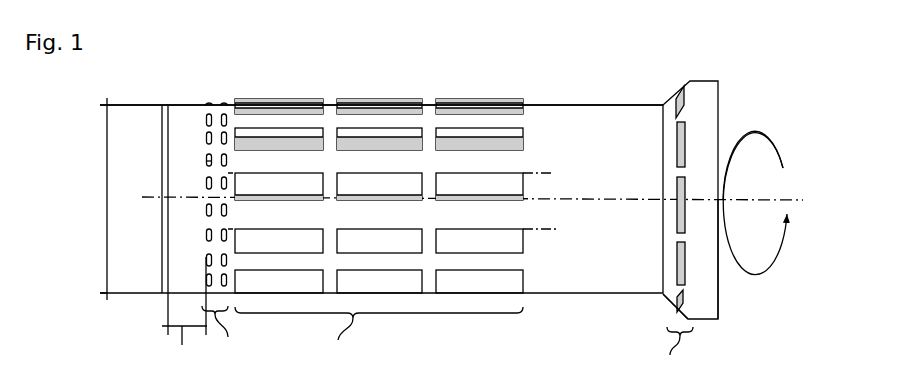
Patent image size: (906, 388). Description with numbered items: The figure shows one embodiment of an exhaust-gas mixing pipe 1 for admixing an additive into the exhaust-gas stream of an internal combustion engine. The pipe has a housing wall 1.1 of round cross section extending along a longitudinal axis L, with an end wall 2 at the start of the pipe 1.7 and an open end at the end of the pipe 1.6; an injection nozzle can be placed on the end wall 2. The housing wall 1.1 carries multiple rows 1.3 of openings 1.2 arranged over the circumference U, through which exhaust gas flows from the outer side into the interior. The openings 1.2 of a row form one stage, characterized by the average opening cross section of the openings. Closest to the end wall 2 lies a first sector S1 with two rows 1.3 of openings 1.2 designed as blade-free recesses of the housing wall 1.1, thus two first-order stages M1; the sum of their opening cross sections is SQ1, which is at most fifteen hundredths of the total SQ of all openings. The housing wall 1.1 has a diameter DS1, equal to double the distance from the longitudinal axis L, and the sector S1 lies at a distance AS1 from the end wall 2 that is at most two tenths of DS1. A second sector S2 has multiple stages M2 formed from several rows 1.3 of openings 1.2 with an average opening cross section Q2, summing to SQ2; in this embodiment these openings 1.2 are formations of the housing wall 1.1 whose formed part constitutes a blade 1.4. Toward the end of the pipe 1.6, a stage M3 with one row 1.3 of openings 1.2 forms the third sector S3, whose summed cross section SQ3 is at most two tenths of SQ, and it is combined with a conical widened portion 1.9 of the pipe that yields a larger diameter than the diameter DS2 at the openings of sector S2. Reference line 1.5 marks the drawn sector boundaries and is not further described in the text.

The exhaust-gas mixing pipe 1 is at (372, 60).
The housing wall 1.1 is at (617, 106).
The openings 1.2 is at (207, 161).
The rows of openings 1.3 is at (687, 54).
The blade 1.4 is at (379, 195).
The reference lines 1.5 is at (552, 173).
The end of the pipe 1.6 is at (722, 277).
The start of the pipe 1.7 is at (163, 265).
The conical widened portion 1.9 is at (659, 312).
The end wall 2 is at (163, 153).
The first-order stage M1 is at (213, 166).
The second-order stage M2 is at (379, 73).
The third-order stage M3 is at (690, 178).
The average opening cross section of sector S2 Q2 is at (379, 91).
The diameter of the housing wall DS1 is at (108, 131).
The diameter regarding the opening of sector S2 DS2 is at (107, 181).
The distance of sector S1 from the end wall AS1 is at (182, 345).
The first sector S1 is at (215, 308).
The sum of opening cross sections of sector S1 SQ1 is at (232, 333).
The second sector S2 is at (379, 333).
The sum of opening cross sections of sector S2 SQ2 is at (349, 339).
The third sector S3 is at (661, 353).
The sum of opening cross sections of sector S3 SQ3 is at (674, 357).
The longitudinal axis L is at (598, 190).
The circumference U is at (753, 133).